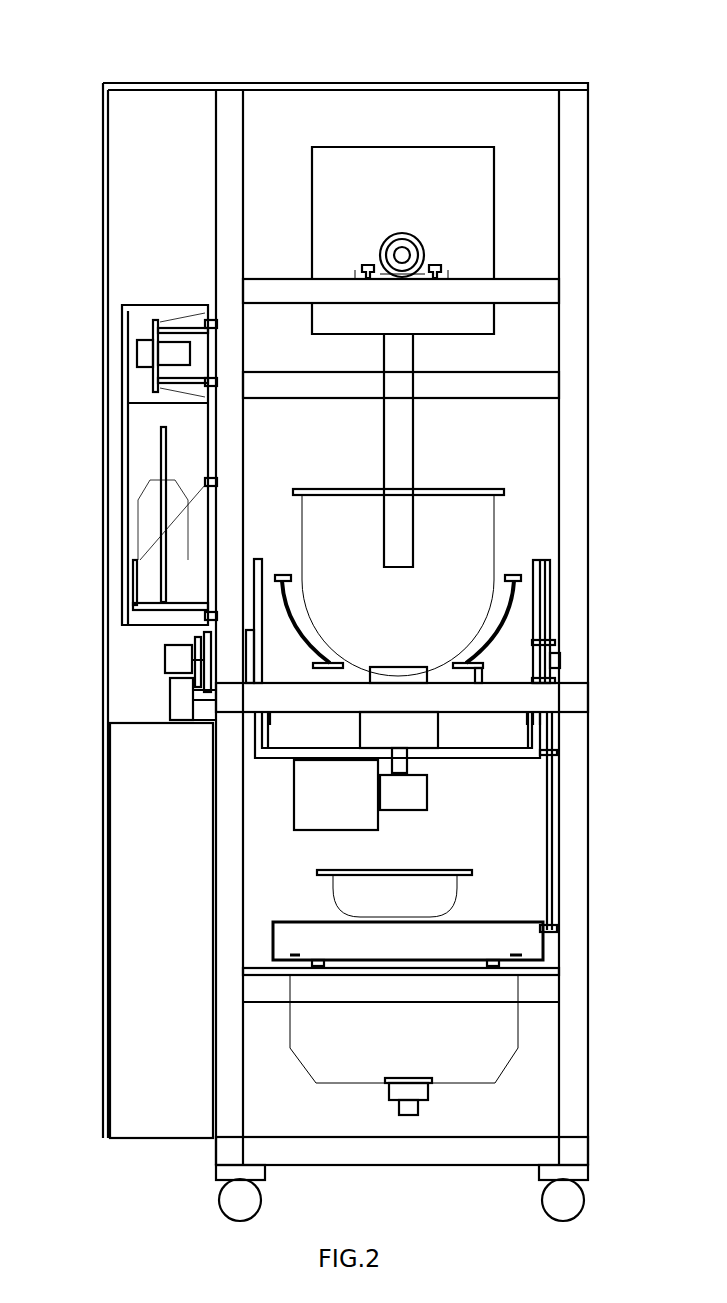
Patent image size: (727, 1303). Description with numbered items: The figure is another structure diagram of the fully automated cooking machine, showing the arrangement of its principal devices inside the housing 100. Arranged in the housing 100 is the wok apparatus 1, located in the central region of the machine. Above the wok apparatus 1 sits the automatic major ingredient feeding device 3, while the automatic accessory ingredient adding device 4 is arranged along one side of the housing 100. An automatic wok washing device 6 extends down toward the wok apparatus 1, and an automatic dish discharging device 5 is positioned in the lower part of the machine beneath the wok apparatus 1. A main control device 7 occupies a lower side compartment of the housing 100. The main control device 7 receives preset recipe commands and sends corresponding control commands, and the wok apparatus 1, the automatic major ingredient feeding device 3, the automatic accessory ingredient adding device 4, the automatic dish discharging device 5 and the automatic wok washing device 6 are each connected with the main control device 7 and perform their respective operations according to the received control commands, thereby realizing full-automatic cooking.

The housing 100 is at (483, 88).
The wok apparatus 1 is at (463, 762).
The automatic major ingredient feeding device 3 is at (477, 238).
The automatic accessory ingredient adding device 4 is at (126, 402).
The automatic dish discharging device 5 is at (520, 955).
The automatic wok washing device 6 is at (391, 424).
The main control device 7 is at (145, 882).